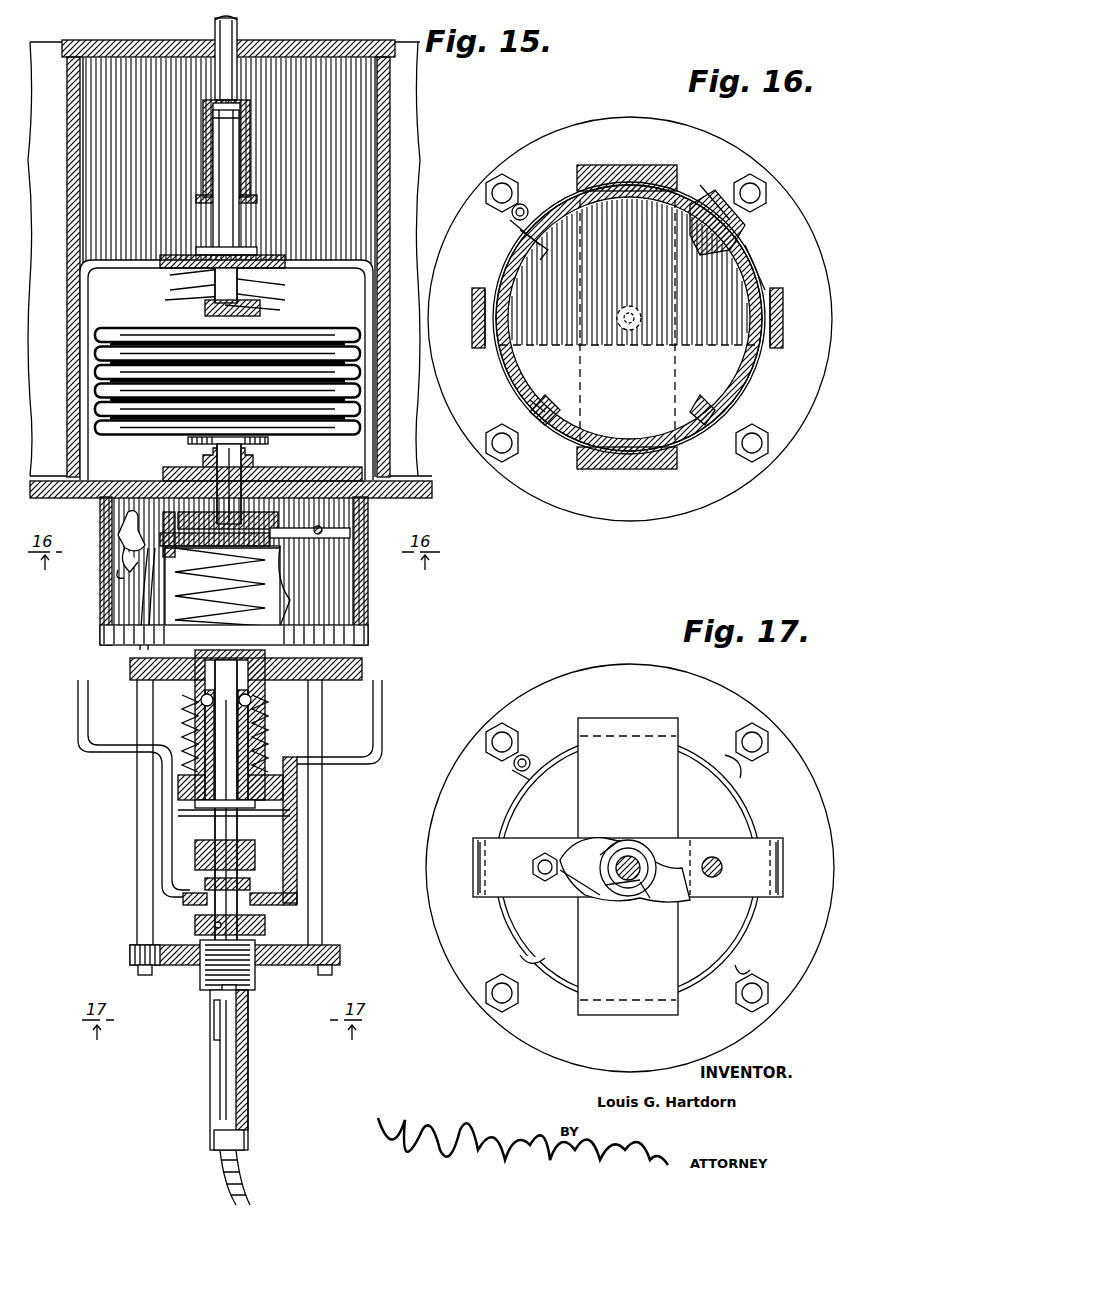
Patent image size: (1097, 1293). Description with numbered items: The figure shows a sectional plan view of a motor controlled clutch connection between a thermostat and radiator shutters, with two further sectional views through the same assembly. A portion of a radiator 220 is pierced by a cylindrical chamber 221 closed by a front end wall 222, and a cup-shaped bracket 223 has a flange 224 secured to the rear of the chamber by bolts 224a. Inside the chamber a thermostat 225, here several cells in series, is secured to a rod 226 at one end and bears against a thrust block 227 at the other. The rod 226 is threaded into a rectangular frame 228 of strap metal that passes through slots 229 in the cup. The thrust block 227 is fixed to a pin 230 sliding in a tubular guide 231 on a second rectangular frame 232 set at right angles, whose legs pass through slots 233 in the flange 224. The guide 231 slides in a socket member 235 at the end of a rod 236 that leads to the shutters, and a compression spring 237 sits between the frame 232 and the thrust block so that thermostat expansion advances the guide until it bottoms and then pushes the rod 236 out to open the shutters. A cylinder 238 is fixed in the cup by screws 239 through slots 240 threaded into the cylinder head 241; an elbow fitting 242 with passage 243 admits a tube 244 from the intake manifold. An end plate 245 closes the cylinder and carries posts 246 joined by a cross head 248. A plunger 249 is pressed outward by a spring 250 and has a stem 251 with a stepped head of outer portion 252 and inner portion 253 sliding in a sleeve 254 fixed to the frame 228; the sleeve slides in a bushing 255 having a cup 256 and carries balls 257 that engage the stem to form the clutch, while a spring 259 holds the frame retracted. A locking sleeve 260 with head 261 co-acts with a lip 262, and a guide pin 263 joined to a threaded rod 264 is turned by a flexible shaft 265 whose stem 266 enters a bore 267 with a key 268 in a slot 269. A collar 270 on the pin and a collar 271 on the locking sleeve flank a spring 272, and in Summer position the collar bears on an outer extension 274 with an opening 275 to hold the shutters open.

In FIG. 15, the radiator 220 is at (412, 98).
In FIG. 15, the cylindrical chamber 221 is at (390, 150).
In FIG. 15, the front end wall 222 is at (290, 60).
In FIG. 15, the cup-shaped bracket 223 is at (368, 610).
In FIG. 16, the cup-shaped bracket 223 is at (765, 250).
In FIG. 15, the flange 224 is at (432, 488).
In FIG. 16, the flange 224 is at (740, 175).
In FIG. 17, the flange 224 is at (595, 675).
In FIG. 16, the bolts 224a is at (770, 190).
In FIG. 17, the bolts 224a is at (492, 735).
In FIG. 15, the thermostat 225 is at (300, 327).
In FIG. 15, the rod 226 is at (242, 455).
In FIG. 16, the rod 226 is at (632, 345).
In FIG. 15, the thrust block 227 is at (200, 308).
In FIG. 15, the rectangular frame 228 is at (228, 515).
In FIG. 16, the rectangular frame 228 is at (633, 165).
In FIG. 17, the rectangular frame 228 is at (628, 725).
In FIG. 15, the slots 229 is at (282, 500).
In FIG. 16, the slots 229 is at (690, 200).
In FIG. 15, the pin 230 is at (175, 278).
In FIG. 15, the tubular guide 231 is at (235, 224).
In FIG. 15, the rectangular frame 232 is at (372, 283).
In FIG. 16, the rectangular frame 232 is at (785, 300).
In FIG. 17, the rectangular frame 232 is at (760, 838).
In FIG. 15, the slots 233 is at (350, 530).
In FIG. 16, the slots 233 is at (470, 318).
In FIG. 17, the slots 233 is at (783, 860).
In FIG. 15, the socket member 235 is at (244, 148).
In FIG. 15, the rod 236 is at (240, 22).
In FIG. 15, the compression spring 237 is at (290, 262).
In FIG. 15, the cylinder 238 is at (345, 583).
In FIG. 16, the cylinder 238 is at (770, 375).
In FIG. 15, the screws 239 is at (322, 530).
In FIG. 16, the screws 239 is at (718, 205).
In FIG. 17, the screws 239 is at (738, 752).
In FIG. 15, the slots 240 is at (122, 516).
In FIG. 16, the slots 240 is at (548, 410).
In FIG. 15, the cylinder head 241 is at (192, 468).
In FIG. 15, the elbow fitting 242 is at (128, 555).
In FIG. 16, the elbow fitting 242 is at (526, 205).
In FIG. 17, the elbow fitting 242 is at (526, 756).
In FIG. 15, the passage 243 is at (170, 520).
In FIG. 16, the passage 243 is at (520, 238).
In FIG. 15, the tube 244 is at (118, 572).
In FIG. 16, the tube 244 is at (518, 203).
In FIG. 17, the tube 244 is at (514, 766).
In FIG. 15, the end plate 245 is at (362, 670).
In FIG. 17, the end plate 245 is at (742, 812).
In FIG. 15, the posts 246 is at (137, 790).
In FIG. 17, the posts 246 is at (714, 857).
In FIG. 15, the cross head 248 is at (180, 967).
In FIG. 17, the cross head 248 is at (565, 850).
In FIG. 15, the plunger 249 is at (368, 635).
In FIG. 15, the spring 250 is at (150, 590).
In FIG. 15, the stem 251 is at (260, 650).
In FIG. 15, the outer portion 252 is at (185, 755).
In FIG. 15, the inner portion 253 is at (182, 712).
In FIG. 15, the sleeve 254 is at (265, 810).
In FIG. 15, the bushing 255 is at (200, 698).
In FIG. 15, the cup 256 is at (215, 652).
In FIG. 15, the balls 257 is at (252, 698).
In FIG. 15, the spring 259 is at (185, 730).
In FIG. 15, the locking sleeve 260 is at (215, 845).
In FIG. 15, the head 261 is at (250, 735).
In FIG. 15, the lip 262 is at (195, 805).
In FIG. 15, the guide pin 263 is at (240, 835).
In FIG. 17, the guide pin 263 is at (632, 856).
In FIG. 15, the threaded rod 264 is at (248, 985).
In FIG. 15, the flexible shaft 265 is at (246, 1163).
In FIG. 15, the stem 266 is at (240, 1082).
In FIG. 15, the bore 267 is at (240, 995).
In FIG. 17, the bore 267 is at (628, 885).
In FIG. 15, the key 268 is at (216, 1030).
In FIG. 17, the key 268 is at (612, 845).
In FIG. 15, the slot 269 is at (218, 1072).
In FIG. 17, the slot 269 is at (600, 900).
In FIG. 15, the collar 270 is at (268, 925).
In FIG. 17, the collar 270 is at (648, 900).
In FIG. 15, the collar 271 is at (258, 853).
In FIG. 15, the spring 272 is at (252, 884).
In FIG. 17, the spring 272 is at (692, 838).
In FIG. 15, the outer extension 274 is at (172, 880).
In FIG. 15, the opening 275 is at (297, 885).